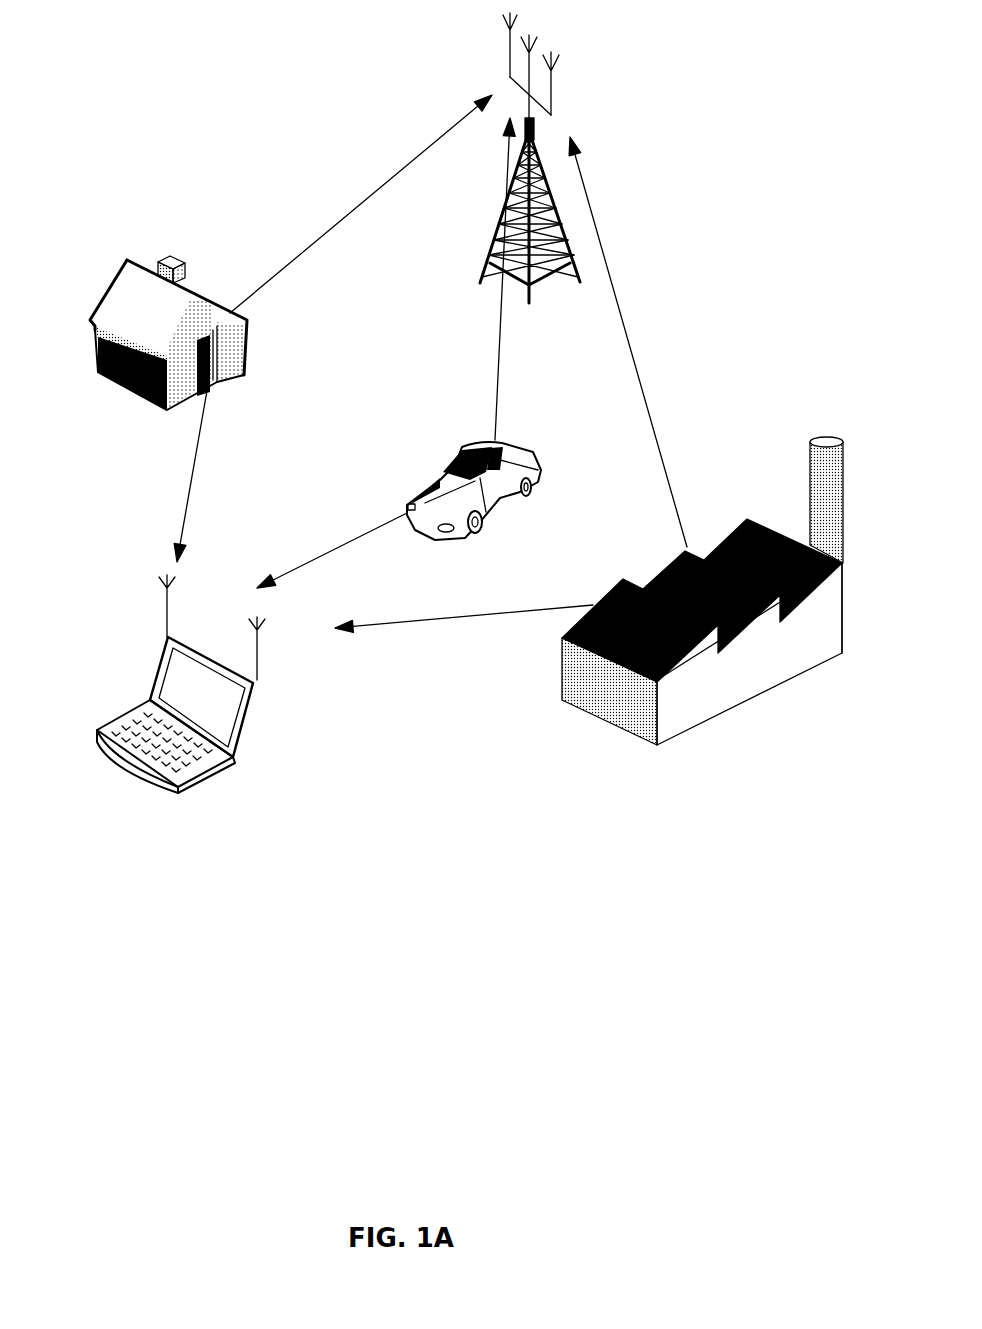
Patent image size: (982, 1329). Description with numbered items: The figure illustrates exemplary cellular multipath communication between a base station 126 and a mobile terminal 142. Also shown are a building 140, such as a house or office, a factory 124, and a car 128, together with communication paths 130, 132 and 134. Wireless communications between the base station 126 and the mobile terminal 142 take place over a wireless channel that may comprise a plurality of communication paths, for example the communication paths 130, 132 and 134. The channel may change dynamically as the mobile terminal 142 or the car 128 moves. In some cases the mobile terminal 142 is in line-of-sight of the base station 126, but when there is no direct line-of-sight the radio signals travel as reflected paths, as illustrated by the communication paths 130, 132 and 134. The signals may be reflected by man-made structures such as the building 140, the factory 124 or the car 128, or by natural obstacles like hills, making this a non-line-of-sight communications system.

The factory 124 is at (672, 737).
The base station 126 is at (529, 303).
The car 128 is at (477, 530).
The communication path 130 is at (300, 255).
The communication path 132 is at (497, 397).
The communication path 134 is at (638, 368).
The building 140 is at (130, 258).
The mobile terminal 142 is at (250, 703).